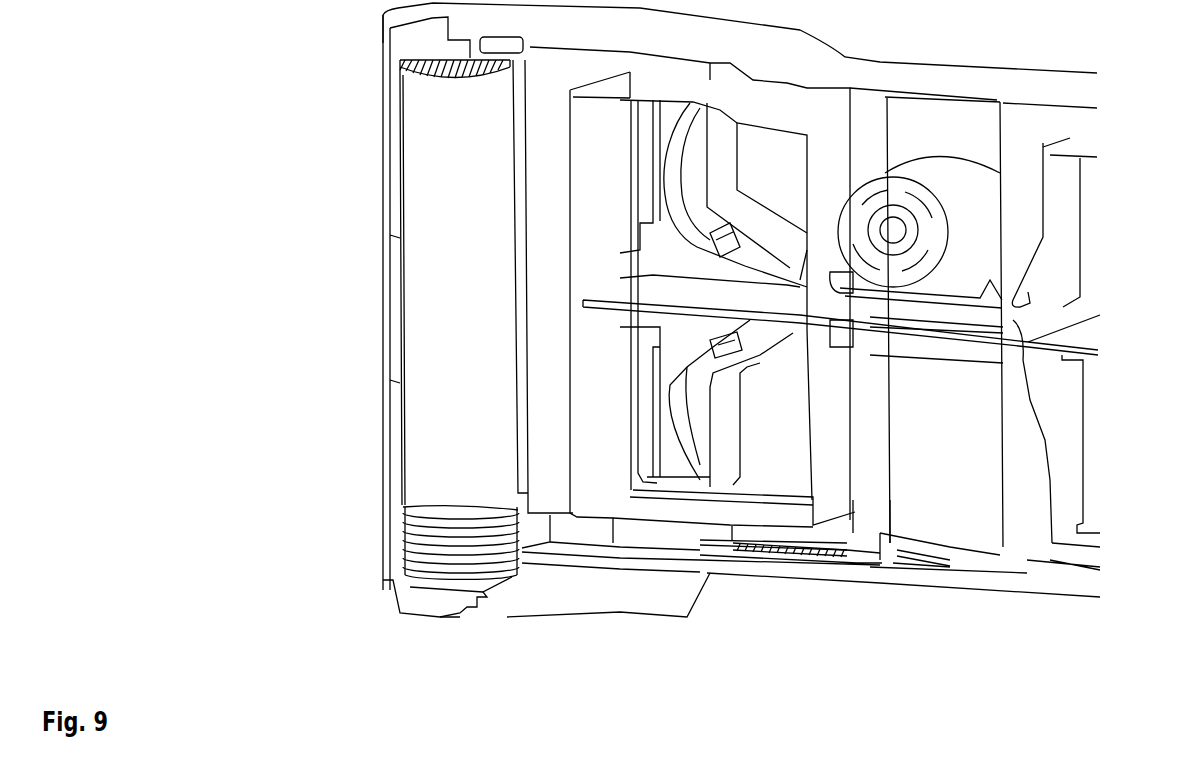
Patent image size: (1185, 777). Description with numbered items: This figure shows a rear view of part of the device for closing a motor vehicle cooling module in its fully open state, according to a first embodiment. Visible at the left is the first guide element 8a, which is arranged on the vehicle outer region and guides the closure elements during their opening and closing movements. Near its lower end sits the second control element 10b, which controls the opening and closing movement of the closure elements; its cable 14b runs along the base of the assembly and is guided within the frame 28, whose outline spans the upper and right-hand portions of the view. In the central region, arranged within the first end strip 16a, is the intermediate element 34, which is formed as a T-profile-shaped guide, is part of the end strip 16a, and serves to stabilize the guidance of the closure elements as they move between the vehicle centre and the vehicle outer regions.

The first guide element 8a is at (427, 193).
The second control element 10b is at (410, 575).
The cable 14b is at (635, 550).
The first end strip 16a is at (763, 165).
The intermediate element 34 is at (687, 140).
The frame 28 is at (1037, 87).